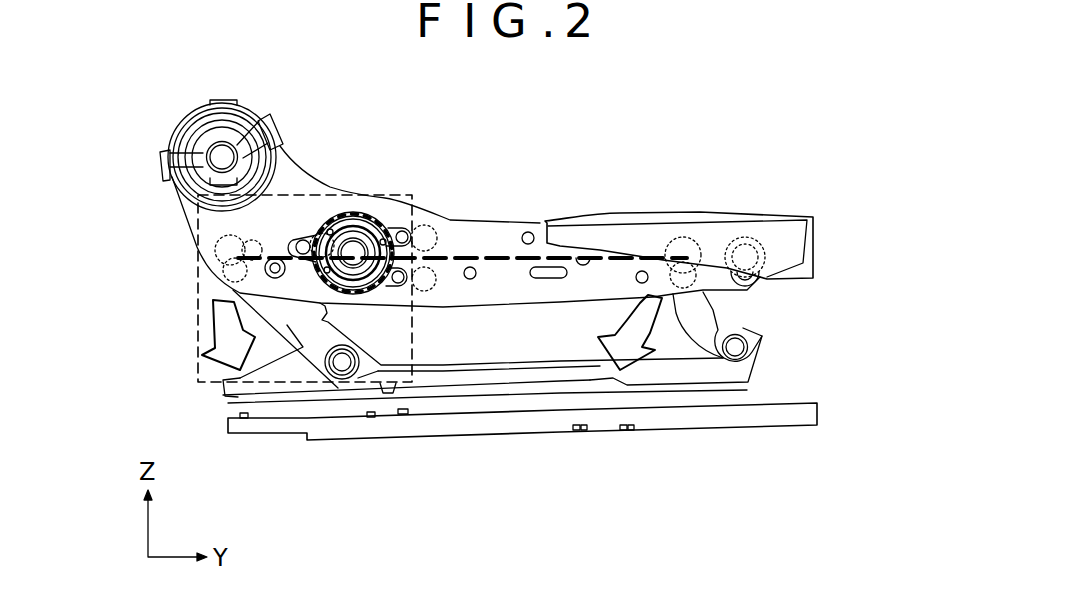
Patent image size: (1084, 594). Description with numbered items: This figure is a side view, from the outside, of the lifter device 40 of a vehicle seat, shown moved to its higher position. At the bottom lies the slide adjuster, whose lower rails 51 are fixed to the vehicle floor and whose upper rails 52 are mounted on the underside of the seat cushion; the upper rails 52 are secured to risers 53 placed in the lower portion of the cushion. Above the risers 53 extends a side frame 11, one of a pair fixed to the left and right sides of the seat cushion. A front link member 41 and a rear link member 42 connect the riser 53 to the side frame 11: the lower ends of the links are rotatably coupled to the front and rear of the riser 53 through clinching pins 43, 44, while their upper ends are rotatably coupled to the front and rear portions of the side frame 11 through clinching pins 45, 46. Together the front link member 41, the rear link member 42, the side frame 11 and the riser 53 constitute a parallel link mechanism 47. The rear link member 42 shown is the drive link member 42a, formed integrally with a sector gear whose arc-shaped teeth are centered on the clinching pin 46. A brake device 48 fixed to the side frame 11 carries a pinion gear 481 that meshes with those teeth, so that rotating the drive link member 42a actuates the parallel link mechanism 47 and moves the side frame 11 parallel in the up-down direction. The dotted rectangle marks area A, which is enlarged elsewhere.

The side frame 11 is at (588, 212).
The lifter device 40 is at (490, 193).
The front link member 41 is at (717, 313).
The rear link member 42 is at (296, 413).
The drive link member 42a is at (288, 330).
The clinching pin 43 is at (763, 345).
The clinching pin 44 is at (342, 366).
The clinching pin 45 is at (686, 258).
The clinching pin 46 is at (244, 292).
The parallel link mechanism 47 is at (553, 390).
The brake device 48 is at (368, 189).
The pinion gear 481 is at (355, 225).
The lower rail 51 is at (780, 432).
The upper rail 52 is at (252, 440).
The riser 53 is at (697, 385).
The area A is at (198, 328).